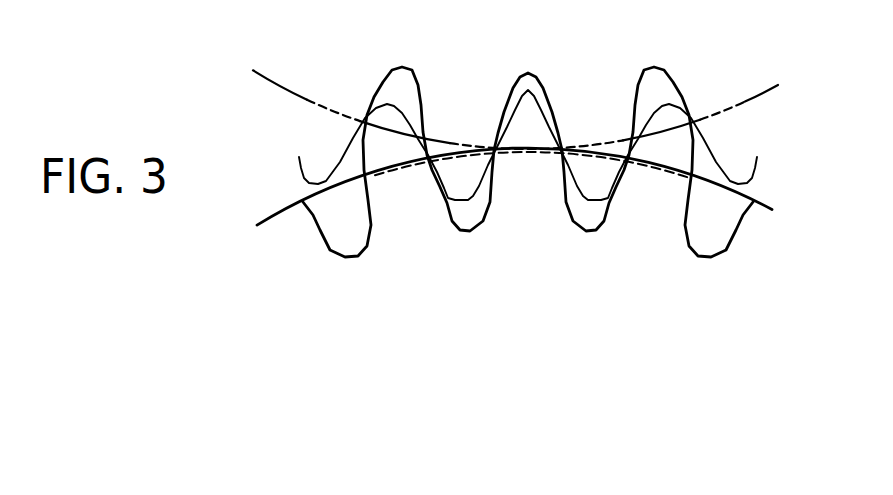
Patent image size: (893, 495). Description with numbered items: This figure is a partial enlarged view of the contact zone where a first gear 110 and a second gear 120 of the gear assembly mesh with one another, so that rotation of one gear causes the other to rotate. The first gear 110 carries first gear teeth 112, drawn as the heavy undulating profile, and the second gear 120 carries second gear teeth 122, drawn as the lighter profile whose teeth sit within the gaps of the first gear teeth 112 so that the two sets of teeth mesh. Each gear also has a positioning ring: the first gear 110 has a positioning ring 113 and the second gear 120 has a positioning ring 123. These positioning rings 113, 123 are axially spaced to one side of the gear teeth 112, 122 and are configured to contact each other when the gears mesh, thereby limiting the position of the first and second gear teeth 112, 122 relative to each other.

The first gear 110 is at (546, 330).
The first gear teeth 112 is at (528, 187).
The positioning ring 113 is at (532, 246).
The second gear 120 is at (418, 40).
The second gear teeth 122 is at (528, 100).
The positioning ring 123 is at (515, 74).